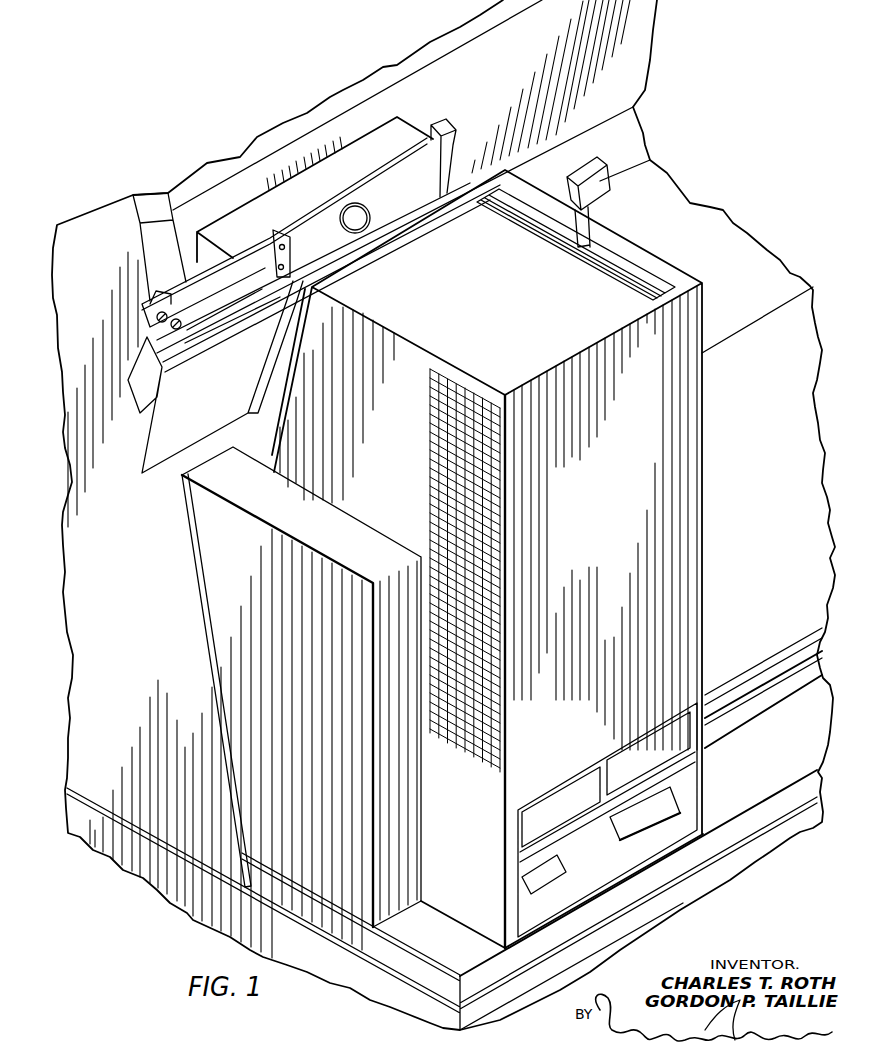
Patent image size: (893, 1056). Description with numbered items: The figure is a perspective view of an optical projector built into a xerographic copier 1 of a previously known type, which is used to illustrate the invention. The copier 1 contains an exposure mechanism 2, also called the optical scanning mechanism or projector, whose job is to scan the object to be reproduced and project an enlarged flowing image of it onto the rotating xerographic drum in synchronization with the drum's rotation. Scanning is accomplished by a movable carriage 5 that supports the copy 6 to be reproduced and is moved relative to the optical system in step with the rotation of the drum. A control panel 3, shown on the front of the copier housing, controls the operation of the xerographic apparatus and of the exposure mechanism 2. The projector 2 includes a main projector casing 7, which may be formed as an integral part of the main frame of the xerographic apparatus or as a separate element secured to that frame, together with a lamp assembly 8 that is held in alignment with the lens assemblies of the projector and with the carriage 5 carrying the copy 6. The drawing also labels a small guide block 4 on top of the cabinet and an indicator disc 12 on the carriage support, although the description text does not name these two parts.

The xerographic copier 1 is at (655, 28).
The exposure mechanism 2 is at (703, 440).
The control panel 3 is at (730, 791).
The card guide block 4 is at (607, 182).
The movable carriage 5 is at (308, 190).
The copy 6 is at (152, 446).
The main projector casing 7 is at (284, 240).
The lamp assembly 8 is at (395, 239).
The indicator disc 12 is at (355, 218).